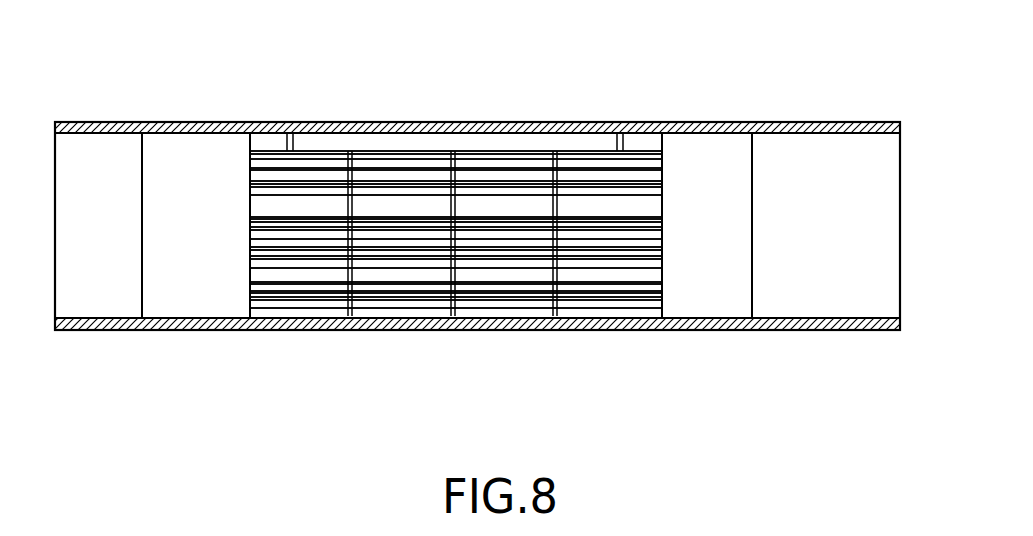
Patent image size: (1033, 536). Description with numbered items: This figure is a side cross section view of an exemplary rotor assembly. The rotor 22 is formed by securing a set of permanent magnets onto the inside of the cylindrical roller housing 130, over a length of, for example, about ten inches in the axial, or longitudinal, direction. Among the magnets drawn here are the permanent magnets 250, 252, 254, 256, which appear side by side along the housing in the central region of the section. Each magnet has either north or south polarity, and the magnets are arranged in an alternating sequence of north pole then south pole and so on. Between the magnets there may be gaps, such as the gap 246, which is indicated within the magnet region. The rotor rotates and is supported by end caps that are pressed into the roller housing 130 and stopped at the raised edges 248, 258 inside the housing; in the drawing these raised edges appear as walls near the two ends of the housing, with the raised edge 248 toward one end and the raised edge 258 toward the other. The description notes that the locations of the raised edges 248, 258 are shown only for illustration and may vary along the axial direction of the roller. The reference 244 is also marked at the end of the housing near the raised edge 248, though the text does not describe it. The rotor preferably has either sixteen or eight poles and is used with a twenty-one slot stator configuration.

The rotor 22 is at (470, 360).
The roller housing 130 is at (843, 122).
The end section 244 is at (80, 122).
The gap 246 is at (280, 225).
The raised edge 248 is at (142, 172).
The permanent magnet 250 is at (305, 208).
The permanent magnet 252 is at (402, 208).
The permanent magnet 254 is at (513, 208).
The permanent magnet 256 is at (602, 208).
The raised edge 258 is at (751, 172).